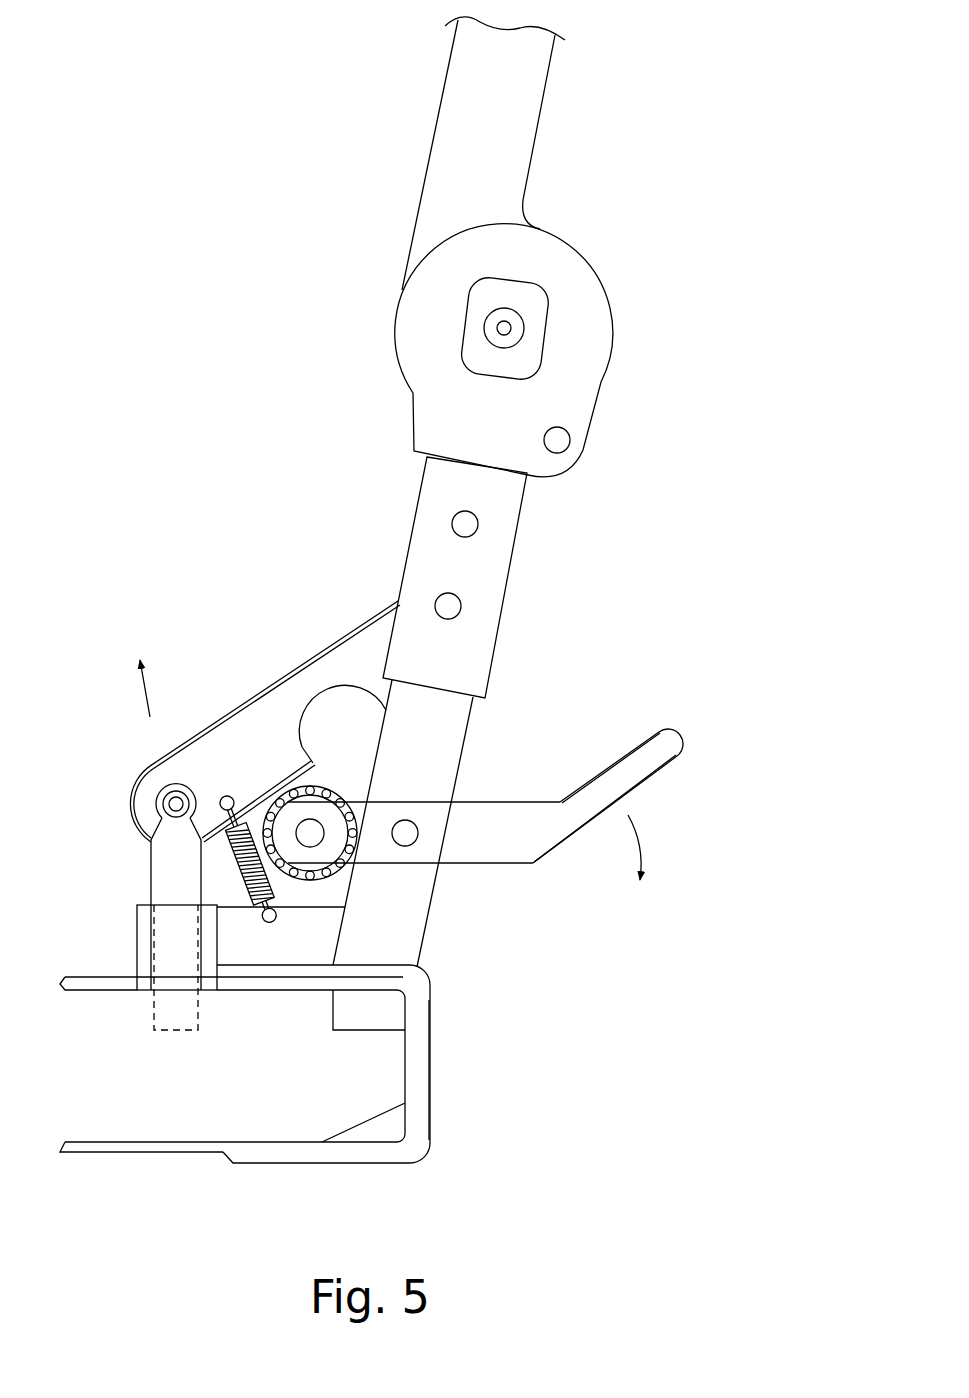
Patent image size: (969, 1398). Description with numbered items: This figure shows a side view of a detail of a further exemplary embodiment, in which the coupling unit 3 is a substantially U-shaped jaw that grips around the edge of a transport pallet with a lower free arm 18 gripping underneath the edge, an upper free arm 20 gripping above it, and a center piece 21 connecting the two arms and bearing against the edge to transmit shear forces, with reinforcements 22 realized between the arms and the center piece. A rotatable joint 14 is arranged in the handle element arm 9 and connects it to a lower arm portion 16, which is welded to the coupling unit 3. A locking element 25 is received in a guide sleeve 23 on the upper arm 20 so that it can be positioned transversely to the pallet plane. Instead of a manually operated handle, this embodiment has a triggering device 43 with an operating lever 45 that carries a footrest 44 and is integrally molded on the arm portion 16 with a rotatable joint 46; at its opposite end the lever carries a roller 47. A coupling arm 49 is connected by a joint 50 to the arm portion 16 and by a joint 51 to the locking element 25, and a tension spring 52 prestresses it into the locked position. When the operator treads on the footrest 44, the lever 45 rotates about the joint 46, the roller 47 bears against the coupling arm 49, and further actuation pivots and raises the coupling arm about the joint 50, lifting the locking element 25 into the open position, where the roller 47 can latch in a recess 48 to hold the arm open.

The handle element arm 9 is at (502, 105).
The rotatable joint 14 is at (520, 330).
The lower arm portion 16 is at (497, 525).
The joint 50 is at (450, 605).
The roller 47 is at (300, 773).
The recess 48 is at (337, 707).
The coupling arm 49 is at (260, 723).
The joint 51 is at (175, 804).
The locking element 25 is at (172, 875).
The tension spring 52 is at (253, 907).
The operating lever 45 is at (490, 840).
The rotatable joint 46 is at (415, 833).
The footrest 44 is at (638, 763).
The triggering device 43 is at (588, 736).
The guide sleeve 23 is at (145, 940).
The upper free arm 20 is at (102, 982).
The center piece 21 is at (420, 1060).
The lower free arm 18 is at (147, 1145).
The reinforcements 22 is at (375, 1180).
The coupling unit 3 is at (468, 1006).